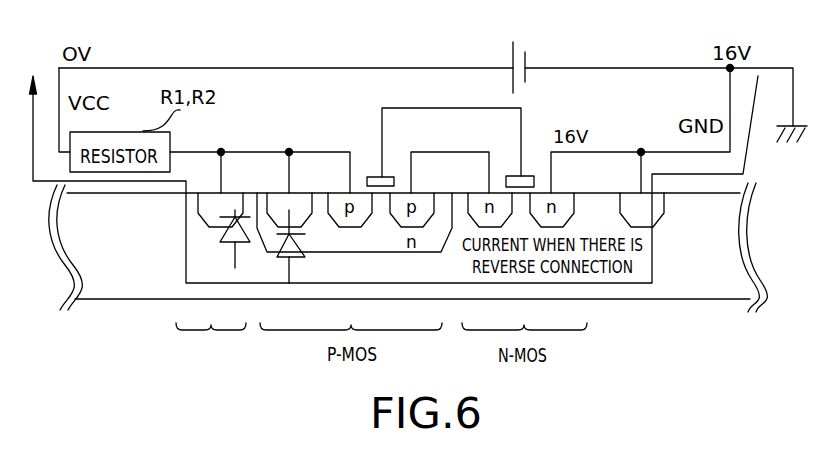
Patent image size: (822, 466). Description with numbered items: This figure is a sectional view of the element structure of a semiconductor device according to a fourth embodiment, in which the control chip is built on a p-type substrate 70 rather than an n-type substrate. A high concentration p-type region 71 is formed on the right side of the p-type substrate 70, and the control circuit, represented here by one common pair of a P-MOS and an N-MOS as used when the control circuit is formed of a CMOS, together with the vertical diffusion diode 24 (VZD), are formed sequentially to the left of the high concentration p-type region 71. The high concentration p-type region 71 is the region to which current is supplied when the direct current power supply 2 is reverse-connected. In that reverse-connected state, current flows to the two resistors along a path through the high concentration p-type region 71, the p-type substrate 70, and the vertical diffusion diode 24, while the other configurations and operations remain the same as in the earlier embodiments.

The direct current power supply 2 is at (512, 54).
The vertical diffusion diode 24 is at (223, 307).
The p-type substrate 70 is at (725, 238).
The high concentration p-type region 71 is at (657, 212).